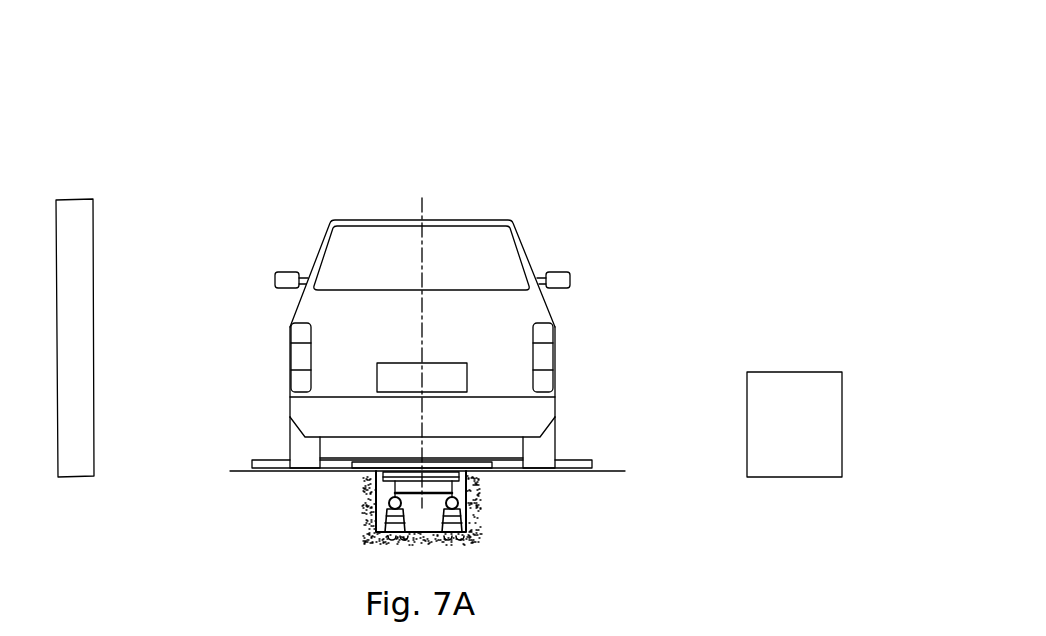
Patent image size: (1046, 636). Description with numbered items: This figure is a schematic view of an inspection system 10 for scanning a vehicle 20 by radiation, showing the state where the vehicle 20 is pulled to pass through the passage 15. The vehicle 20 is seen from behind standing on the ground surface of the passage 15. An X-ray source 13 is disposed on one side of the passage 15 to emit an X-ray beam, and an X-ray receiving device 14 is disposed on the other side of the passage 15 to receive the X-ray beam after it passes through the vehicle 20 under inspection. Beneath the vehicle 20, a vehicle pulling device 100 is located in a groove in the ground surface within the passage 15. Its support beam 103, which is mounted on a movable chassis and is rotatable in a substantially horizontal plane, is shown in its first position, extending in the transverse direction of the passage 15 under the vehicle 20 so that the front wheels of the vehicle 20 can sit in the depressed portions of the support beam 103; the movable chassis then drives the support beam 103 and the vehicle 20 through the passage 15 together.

The inspection system 10 is at (729, 76).
The vehicle 20 is at (497, 258).
The support beam 103 is at (578, 460).
The passage 15 is at (613, 472).
The vehicle pulling device 100 is at (500, 553).
The X-ray receiving device 14 is at (72, 450).
The X-ray source 13 is at (788, 448).